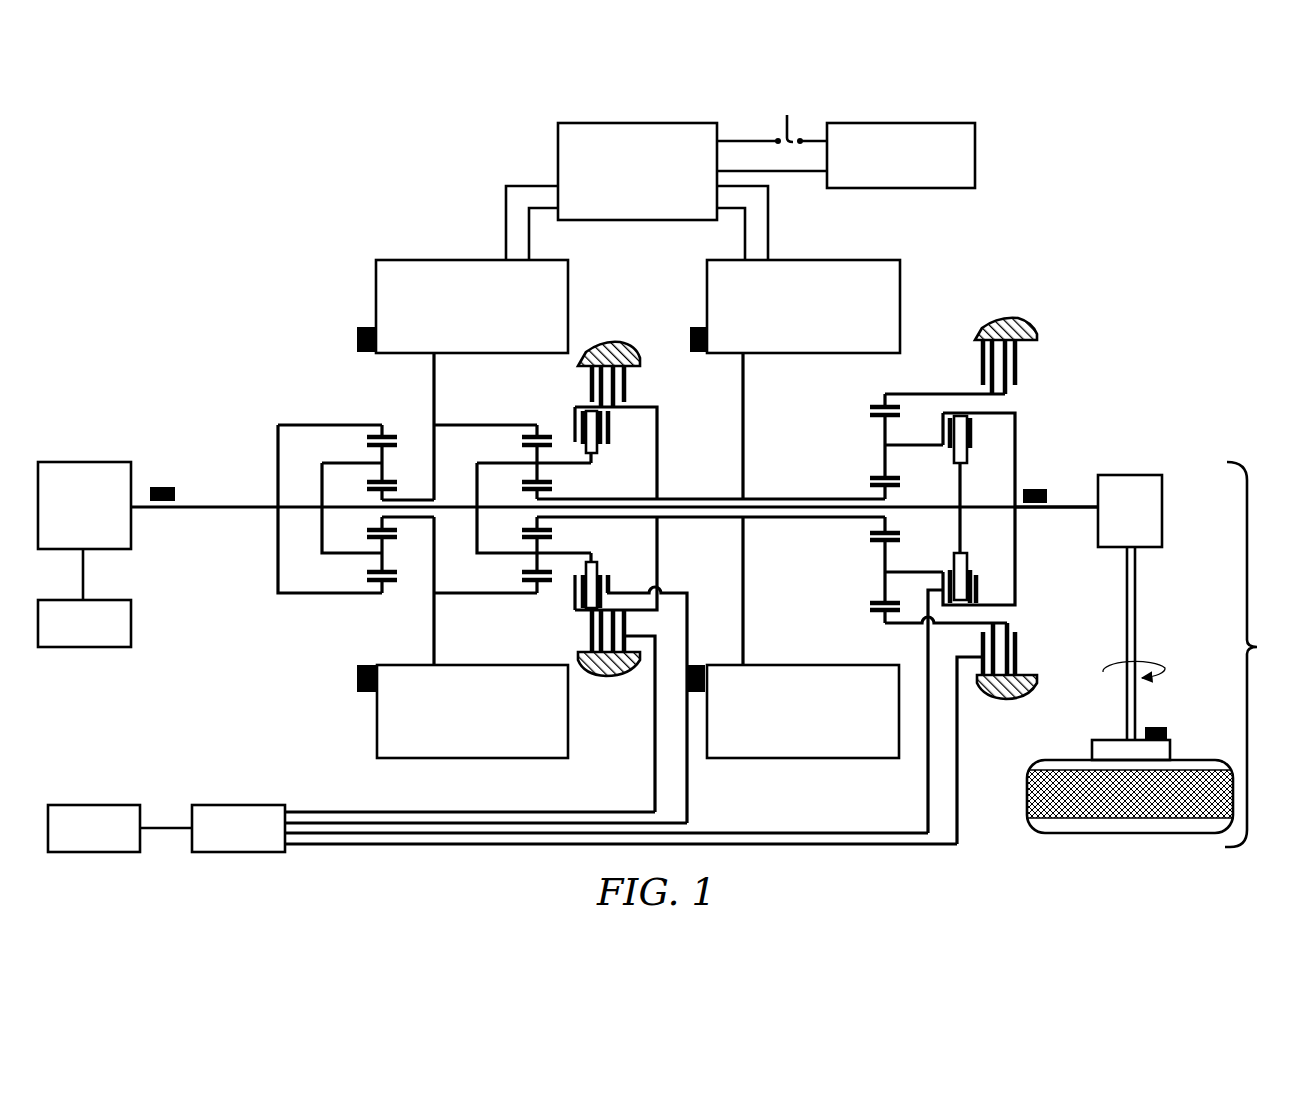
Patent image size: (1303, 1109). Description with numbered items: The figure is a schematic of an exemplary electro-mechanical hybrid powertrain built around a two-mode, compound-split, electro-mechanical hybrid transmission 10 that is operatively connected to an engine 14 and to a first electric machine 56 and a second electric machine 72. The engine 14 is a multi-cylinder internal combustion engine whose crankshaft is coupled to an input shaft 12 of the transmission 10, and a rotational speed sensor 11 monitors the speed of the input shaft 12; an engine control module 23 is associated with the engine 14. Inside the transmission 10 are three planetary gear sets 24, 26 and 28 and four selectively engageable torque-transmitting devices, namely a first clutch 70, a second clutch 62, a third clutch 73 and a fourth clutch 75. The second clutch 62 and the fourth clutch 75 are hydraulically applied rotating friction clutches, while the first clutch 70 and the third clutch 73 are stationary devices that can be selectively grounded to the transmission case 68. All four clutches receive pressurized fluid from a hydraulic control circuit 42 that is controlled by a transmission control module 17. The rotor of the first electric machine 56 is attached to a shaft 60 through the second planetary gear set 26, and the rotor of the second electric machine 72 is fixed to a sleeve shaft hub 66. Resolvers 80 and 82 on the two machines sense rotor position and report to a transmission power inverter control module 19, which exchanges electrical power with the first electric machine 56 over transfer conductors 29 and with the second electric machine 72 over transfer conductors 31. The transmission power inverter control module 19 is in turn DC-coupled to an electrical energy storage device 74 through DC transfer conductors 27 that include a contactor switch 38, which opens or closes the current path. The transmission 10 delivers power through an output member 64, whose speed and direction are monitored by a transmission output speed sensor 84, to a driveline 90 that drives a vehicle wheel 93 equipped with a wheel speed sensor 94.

The electro-mechanical hybrid transmission 10 is at (332, 218).
The rotational speed sensor 11 is at (162, 487).
The input shaft 12 is at (240, 505).
The engine 14 is at (90, 462).
The transmission control module 17 is at (83, 805).
The transmission power inverter control module 19 is at (558, 141).
The engine control module 23 is at (128, 641).
The first planetary gear set 24 is at (370, 416).
The second planetary gear set 26 is at (530, 416).
The DC transfer conductors 27 is at (735, 141).
The third planetary gear set 28 is at (878, 391).
The transfer conductors 29 is at (506, 215).
The transfer conductors 31 is at (768, 218).
The contactor switch 38 is at (789, 120).
The hydraulic control circuit 42 is at (205, 805).
The first electric machine 56 is at (376, 297).
The shaft 60 is at (935, 505).
The clutch C2 62 is at (978, 454).
The output member 64 is at (1072, 505).
The sleeve shaft hub 66 is at (785, 499).
The transmission case 68 is at (612, 348).
The clutch C1 70 is at (975, 360).
The second electric machine 72 is at (900, 282).
The clutch C3 73 is at (634, 384).
The electrical energy storage device 74 is at (975, 137).
The clutch C4 75 is at (600, 451).
The resolver 80 is at (357, 340).
The resolver 82 is at (695, 327).
The transmission output speed sensor 84 is at (1038, 488).
The driveline 90 is at (1153, 654).
The vehicle wheel 93 is at (1092, 750).
The wheel speed sensor 94 is at (1158, 727).